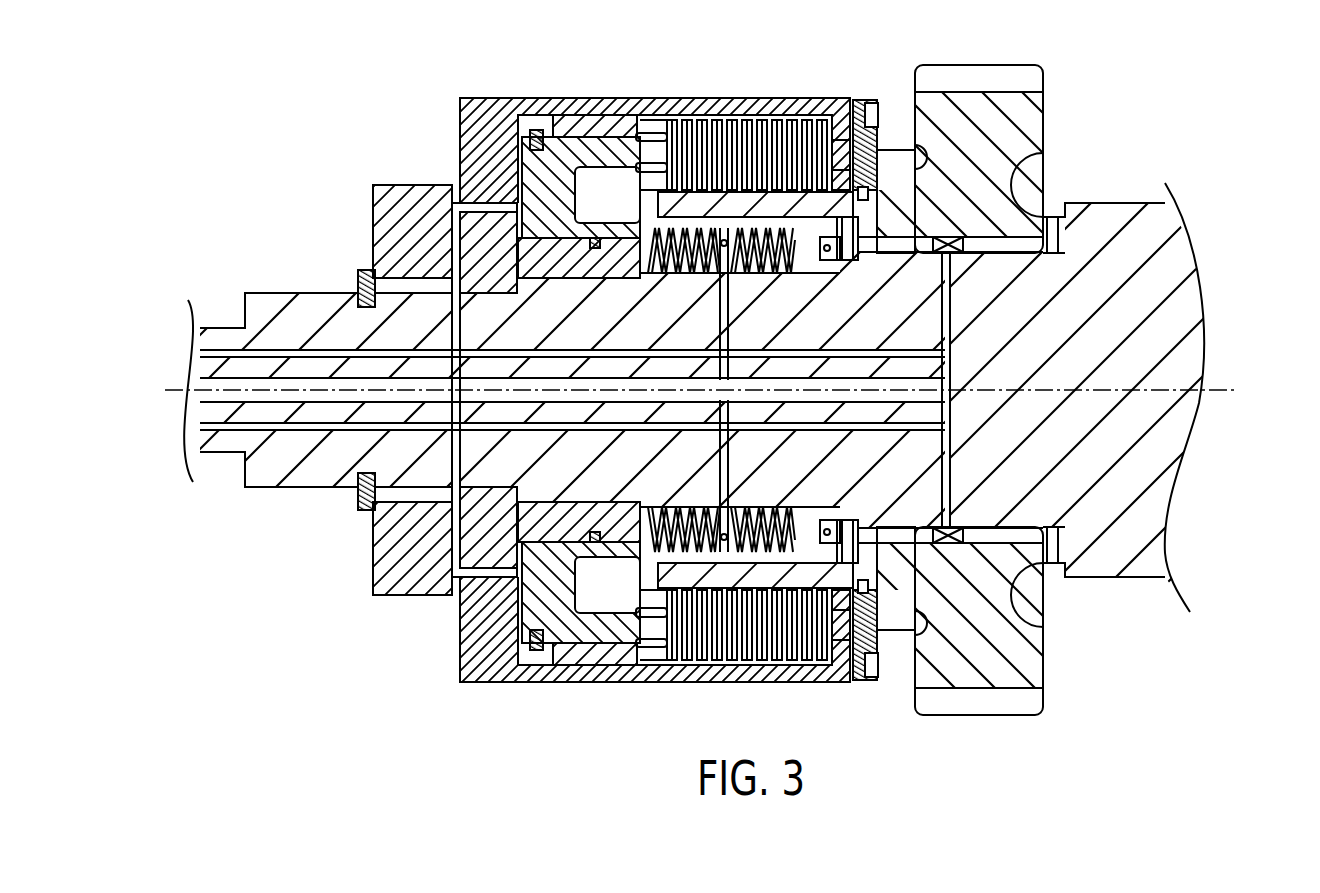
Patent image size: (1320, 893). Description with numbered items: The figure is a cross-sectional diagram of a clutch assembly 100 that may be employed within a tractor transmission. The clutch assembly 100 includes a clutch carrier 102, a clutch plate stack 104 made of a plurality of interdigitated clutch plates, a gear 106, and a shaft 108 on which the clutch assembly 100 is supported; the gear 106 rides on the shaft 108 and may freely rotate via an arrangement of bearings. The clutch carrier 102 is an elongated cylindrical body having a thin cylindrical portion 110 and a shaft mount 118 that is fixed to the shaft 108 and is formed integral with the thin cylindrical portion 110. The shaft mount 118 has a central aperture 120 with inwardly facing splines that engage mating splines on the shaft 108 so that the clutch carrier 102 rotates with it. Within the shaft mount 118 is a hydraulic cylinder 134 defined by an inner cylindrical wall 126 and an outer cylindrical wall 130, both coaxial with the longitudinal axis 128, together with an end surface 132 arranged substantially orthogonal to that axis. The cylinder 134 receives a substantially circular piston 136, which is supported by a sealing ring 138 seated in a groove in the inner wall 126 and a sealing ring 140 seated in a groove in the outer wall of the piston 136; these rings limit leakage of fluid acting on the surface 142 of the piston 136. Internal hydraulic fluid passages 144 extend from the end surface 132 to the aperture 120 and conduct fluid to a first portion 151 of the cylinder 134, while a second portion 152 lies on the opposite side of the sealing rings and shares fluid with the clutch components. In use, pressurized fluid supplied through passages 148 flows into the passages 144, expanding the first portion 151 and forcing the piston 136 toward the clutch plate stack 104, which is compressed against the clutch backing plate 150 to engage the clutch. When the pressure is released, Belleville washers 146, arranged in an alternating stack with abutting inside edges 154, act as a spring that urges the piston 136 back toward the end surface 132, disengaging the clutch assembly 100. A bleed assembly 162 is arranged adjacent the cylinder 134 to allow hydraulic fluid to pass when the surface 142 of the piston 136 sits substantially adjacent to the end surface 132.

The clutch assembly 100 is at (290, 100).
The clutch carrier 102 is at (700, 98).
The clutch plate stack 104 is at (780, 110).
The gear 106 is at (1000, 130).
The shaft 108 is at (1162, 203).
The thin cylindrical portion 110 is at (868, 118).
The shaft mount 118 is at (340, 152).
The central aperture 120 is at (393, 502).
The inner cylindrical wall 126 is at (548, 262).
The longitudinal axis 128 is at (172, 390).
The outer cylindrical wall 130 is at (600, 118).
The end surface 132 is at (565, 230).
The hydraulic cylinder 134 is at (515, 158).
The piston 136 is at (568, 180).
The sealing ring 138 is at (640, 515).
The sealing ring 140 is at (540, 130).
The surface 142 is at (470, 190).
The internal hydraulic fluid passages 144 is at (478, 256).
The Belleville washers 146 is at (675, 276).
The passages 148 is at (326, 333).
The clutch backing plate 150 is at (870, 100).
The first portion 151 is at (505, 158).
The second portion 152 is at (636, 133).
The abutting inside edges 154 is at (798, 272).
The bleed assembly 162 is at (528, 80).